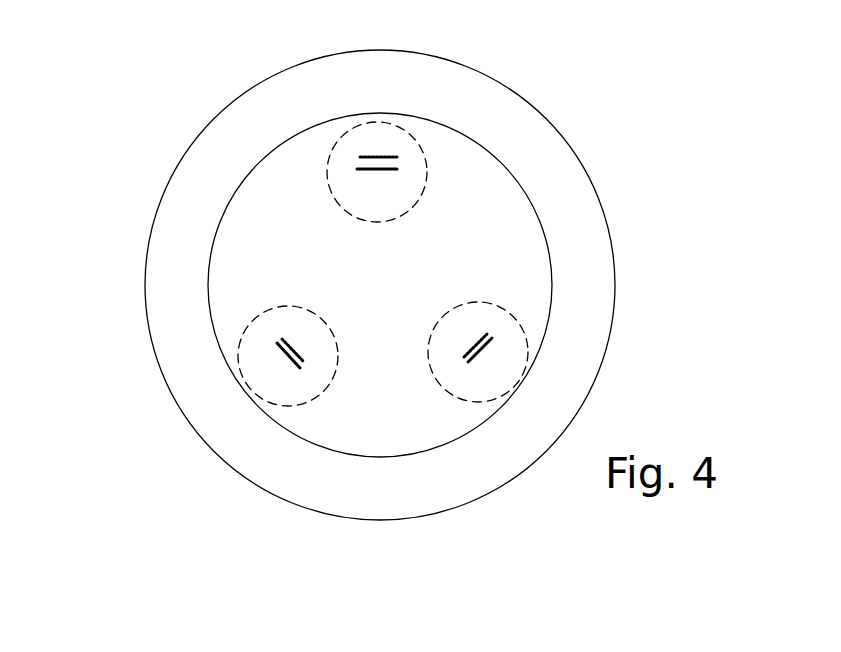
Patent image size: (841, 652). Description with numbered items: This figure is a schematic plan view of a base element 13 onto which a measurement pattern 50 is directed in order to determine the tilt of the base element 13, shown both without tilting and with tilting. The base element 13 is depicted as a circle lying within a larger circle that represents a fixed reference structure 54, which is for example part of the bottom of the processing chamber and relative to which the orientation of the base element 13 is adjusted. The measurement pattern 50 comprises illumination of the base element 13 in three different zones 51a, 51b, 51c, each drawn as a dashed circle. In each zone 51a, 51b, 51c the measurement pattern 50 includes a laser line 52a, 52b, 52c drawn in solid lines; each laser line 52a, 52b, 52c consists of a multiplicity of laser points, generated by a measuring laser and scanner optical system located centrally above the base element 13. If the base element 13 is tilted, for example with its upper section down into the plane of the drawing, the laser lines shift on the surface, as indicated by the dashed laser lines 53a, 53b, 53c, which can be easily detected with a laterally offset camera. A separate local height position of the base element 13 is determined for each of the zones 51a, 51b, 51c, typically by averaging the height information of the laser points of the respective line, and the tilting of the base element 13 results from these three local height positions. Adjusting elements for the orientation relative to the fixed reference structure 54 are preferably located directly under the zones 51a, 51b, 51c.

The base element 13 is at (238, 242).
The measurement pattern 50 is at (409, 158).
The zone 51a is at (427, 169).
The zone 51b is at (238, 343).
The zone 51c is at (522, 327).
The laser line 52a is at (357, 170).
The laser line 52b is at (290, 368).
The laser line 52c is at (488, 363).
The dashed laser line 53a is at (360, 157).
The dashed laser line 53b is at (295, 353).
The dashed laser line 53c is at (485, 340).
The fixed reference structure 54 is at (181, 186).